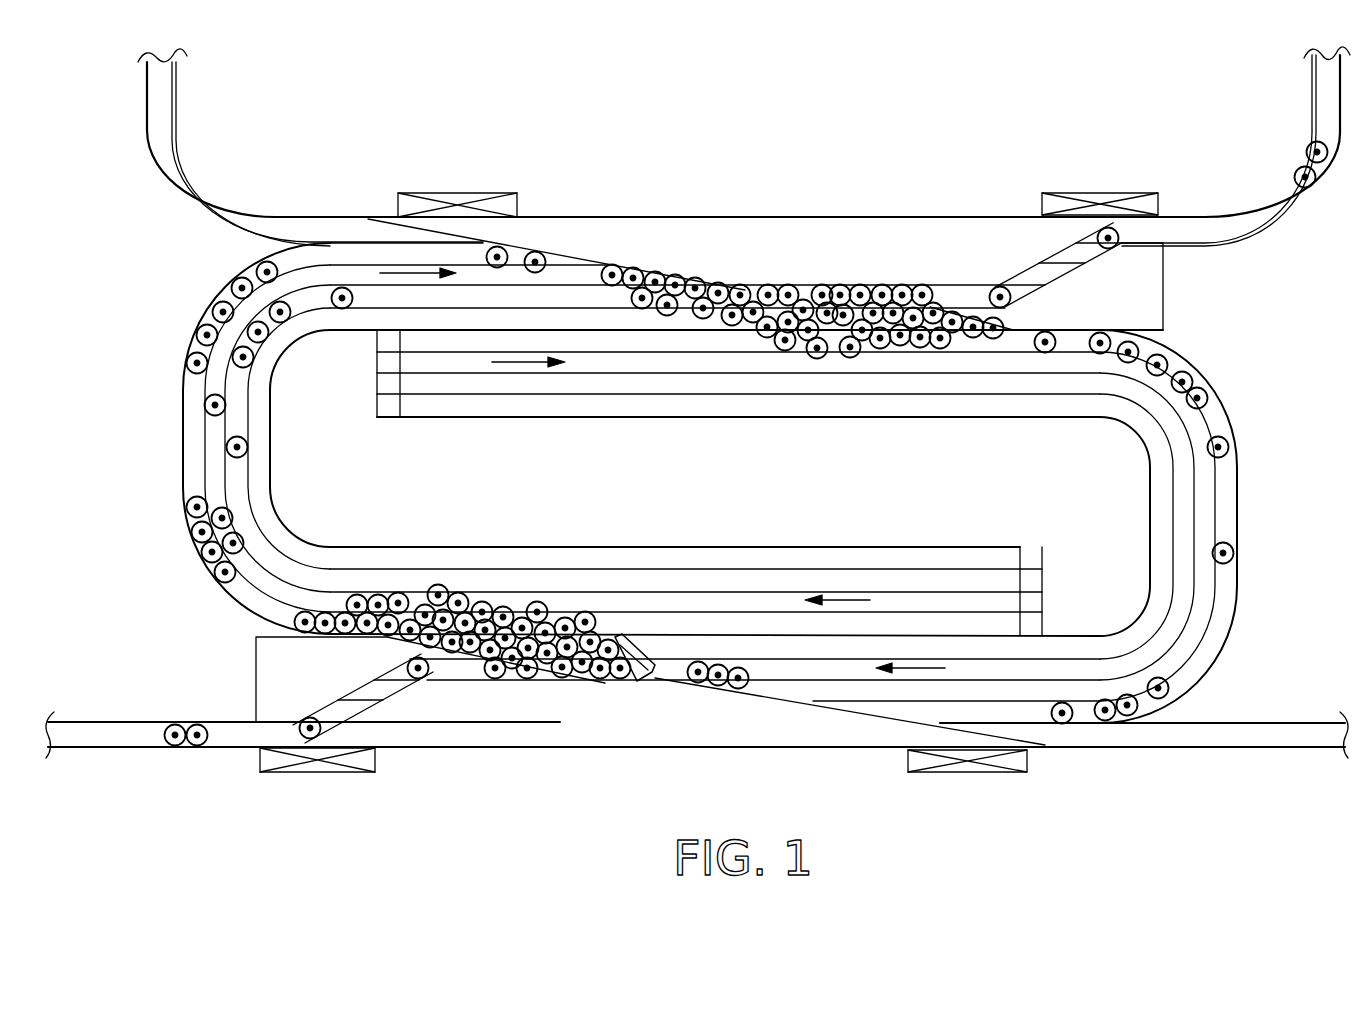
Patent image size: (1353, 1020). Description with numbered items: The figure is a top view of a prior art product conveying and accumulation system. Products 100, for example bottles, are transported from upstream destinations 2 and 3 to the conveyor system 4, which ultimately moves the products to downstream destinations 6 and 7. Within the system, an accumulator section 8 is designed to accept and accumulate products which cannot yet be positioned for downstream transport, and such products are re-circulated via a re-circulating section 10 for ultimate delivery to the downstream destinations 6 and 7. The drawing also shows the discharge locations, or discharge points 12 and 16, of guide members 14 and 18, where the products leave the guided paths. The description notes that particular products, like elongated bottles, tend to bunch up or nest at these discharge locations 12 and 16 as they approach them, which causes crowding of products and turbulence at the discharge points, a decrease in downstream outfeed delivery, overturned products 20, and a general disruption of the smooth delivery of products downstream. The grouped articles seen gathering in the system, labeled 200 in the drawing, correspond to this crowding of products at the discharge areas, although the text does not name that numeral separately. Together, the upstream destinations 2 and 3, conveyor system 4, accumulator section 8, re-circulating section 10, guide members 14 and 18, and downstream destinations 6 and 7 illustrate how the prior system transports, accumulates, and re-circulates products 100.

The upstream destination 2 is at (162, 87).
The upstream destination 3 is at (1255, 735).
The conveyor system 4 is at (467, 255).
The downstream destination 6 is at (1315, 80).
The downstream destination 7 is at (110, 733).
The accumulator section 8 is at (725, 352).
The re-circulating section 10 is at (1205, 503).
The discharge location 12 is at (950, 320).
The guide member 14 is at (1048, 307).
The discharge location 16 is at (478, 660).
The guide member 18 is at (355, 660).
The overturned product 20 is at (628, 682).
The products 100 is at (253, 262).
The accumulated articles 200 is at (742, 292).